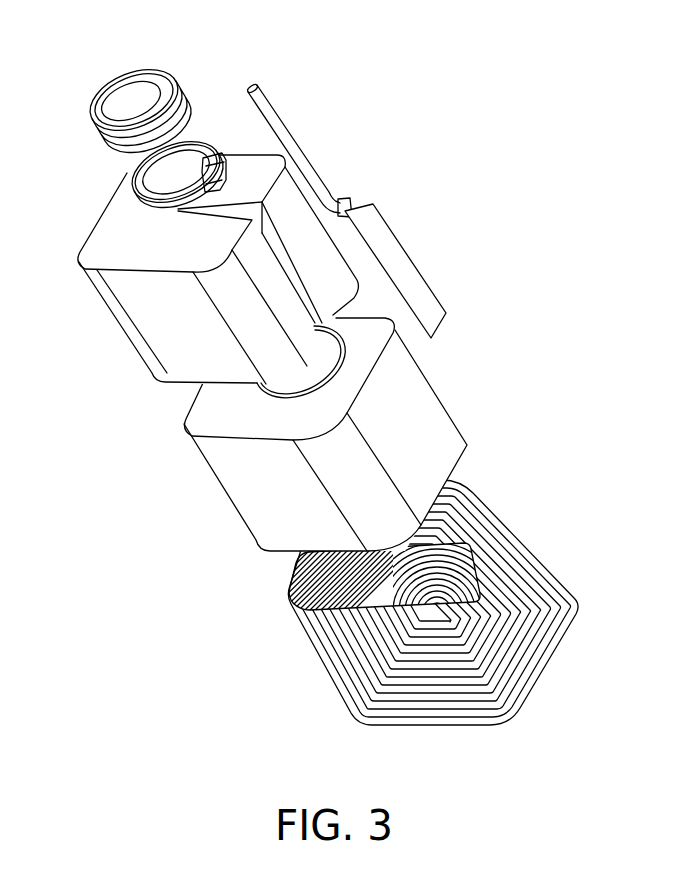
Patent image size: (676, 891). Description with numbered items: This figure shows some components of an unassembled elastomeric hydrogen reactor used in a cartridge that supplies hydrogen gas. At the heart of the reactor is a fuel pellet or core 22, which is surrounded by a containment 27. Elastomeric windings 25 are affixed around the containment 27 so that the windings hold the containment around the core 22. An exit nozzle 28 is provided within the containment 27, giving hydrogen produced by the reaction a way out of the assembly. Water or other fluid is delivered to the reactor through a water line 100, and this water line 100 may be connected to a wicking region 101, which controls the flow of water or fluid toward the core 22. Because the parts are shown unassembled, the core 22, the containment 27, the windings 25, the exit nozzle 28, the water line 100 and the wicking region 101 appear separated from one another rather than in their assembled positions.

The fuel pellet or core 22 is at (170, 314).
The elastomeric winding 25 is at (298, 664).
The containment 27 is at (417, 418).
The exit nozzle 28 is at (174, 62).
The water line 100 is at (295, 118).
The wicking region 101 is at (400, 218).